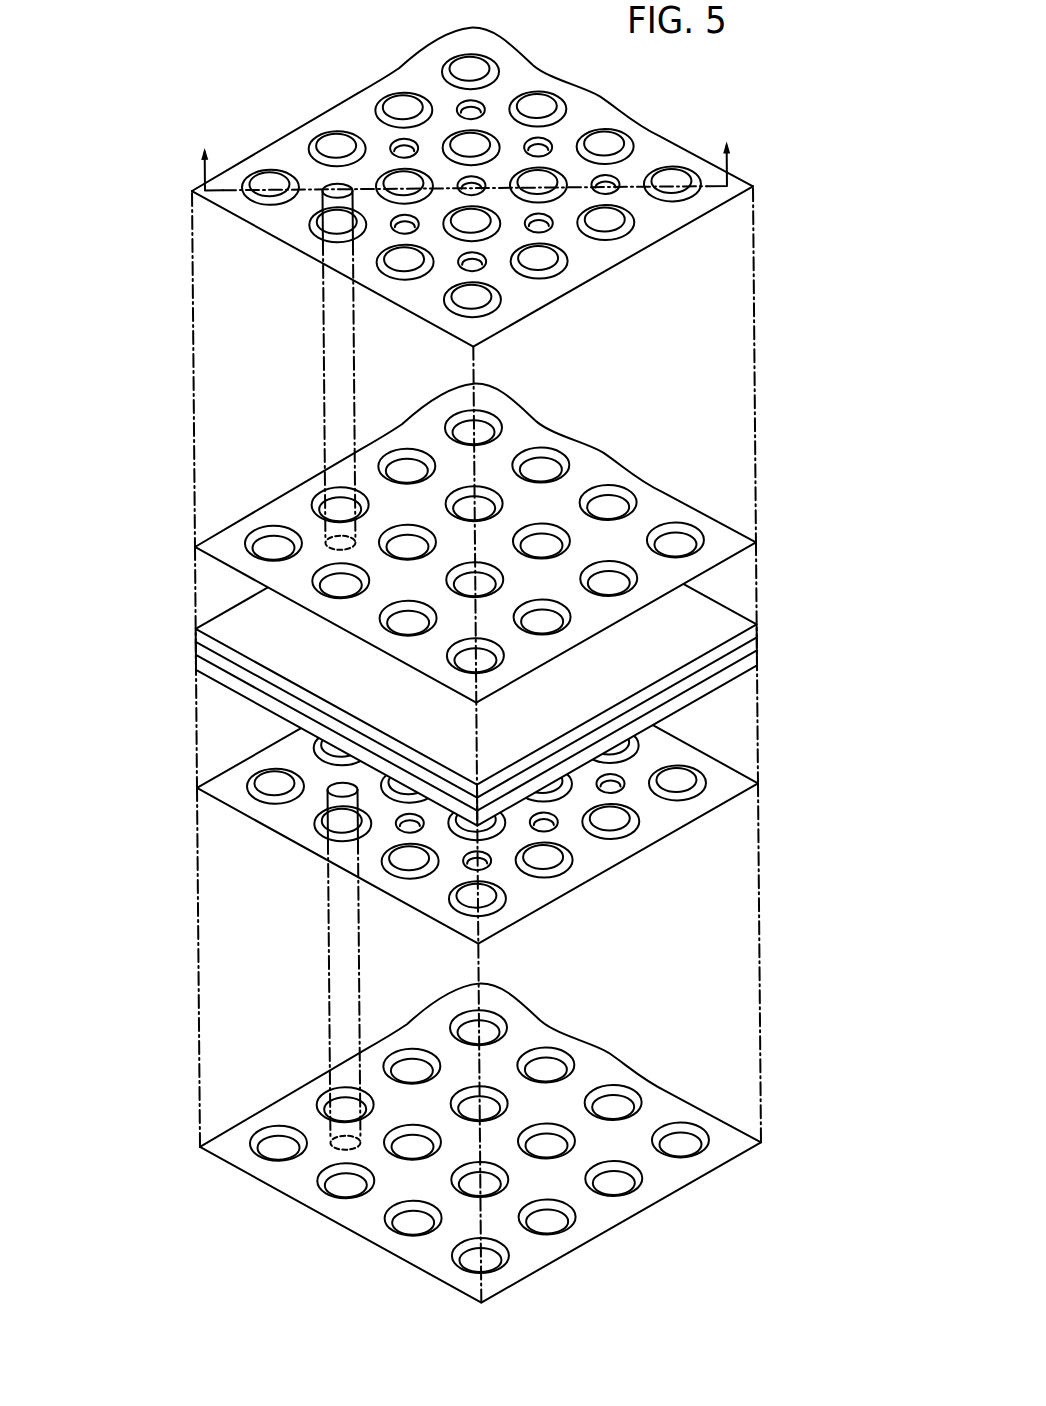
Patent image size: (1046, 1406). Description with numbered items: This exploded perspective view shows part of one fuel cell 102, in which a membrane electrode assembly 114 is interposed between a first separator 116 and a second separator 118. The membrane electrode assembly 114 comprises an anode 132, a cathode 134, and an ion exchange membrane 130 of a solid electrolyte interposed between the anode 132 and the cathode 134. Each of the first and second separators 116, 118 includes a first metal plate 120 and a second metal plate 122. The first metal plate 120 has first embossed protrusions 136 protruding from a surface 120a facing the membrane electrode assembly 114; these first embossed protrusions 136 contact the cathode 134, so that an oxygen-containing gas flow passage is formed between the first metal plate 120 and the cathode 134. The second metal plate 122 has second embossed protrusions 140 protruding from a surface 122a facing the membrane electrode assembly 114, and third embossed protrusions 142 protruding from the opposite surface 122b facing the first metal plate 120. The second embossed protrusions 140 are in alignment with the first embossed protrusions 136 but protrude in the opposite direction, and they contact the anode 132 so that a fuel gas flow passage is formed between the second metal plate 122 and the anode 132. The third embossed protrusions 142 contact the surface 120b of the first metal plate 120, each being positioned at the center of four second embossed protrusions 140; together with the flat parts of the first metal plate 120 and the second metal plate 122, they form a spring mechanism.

The fuel cell 102 is at (282, 49).
The membrane electrode assembly 114 is at (120, 610).
The first separator 116 is at (112, 509).
The second separator 118 is at (120, 732).
The first metal plate 120 is at (190, 519).
The surface of the first metal plate facing the membrane electrode assembly 120a is at (629, 596).
The surface of the first metal plate 120b is at (682, 502).
The second metal plate 122 is at (188, 177).
The surface of the second metal plate facing the membrane electrode assembly 122a is at (508, 52).
The surface of the second metal plate facing the first metal plate 122b is at (677, 208).
The ion exchange membrane 130 is at (196, 650).
The anode 132 is at (196, 664).
The cathode 134 is at (196, 636).
The first embossed protrusions 136 is at (397, 630).
The second embossed protrusions 140 is at (337, 137).
The third embossed protrusions 142 is at (606, 193).